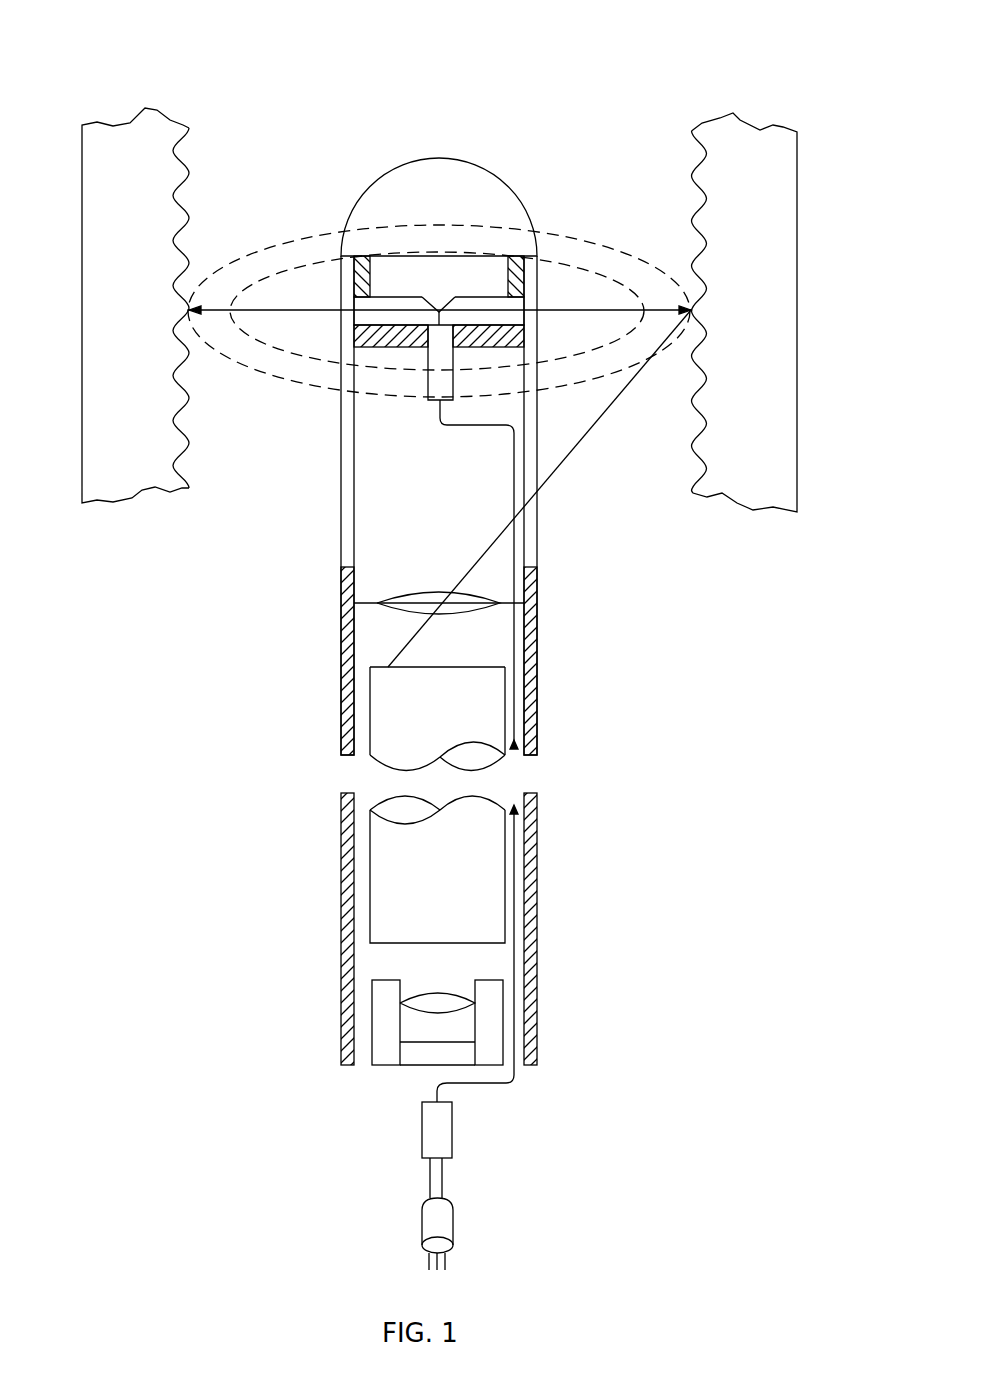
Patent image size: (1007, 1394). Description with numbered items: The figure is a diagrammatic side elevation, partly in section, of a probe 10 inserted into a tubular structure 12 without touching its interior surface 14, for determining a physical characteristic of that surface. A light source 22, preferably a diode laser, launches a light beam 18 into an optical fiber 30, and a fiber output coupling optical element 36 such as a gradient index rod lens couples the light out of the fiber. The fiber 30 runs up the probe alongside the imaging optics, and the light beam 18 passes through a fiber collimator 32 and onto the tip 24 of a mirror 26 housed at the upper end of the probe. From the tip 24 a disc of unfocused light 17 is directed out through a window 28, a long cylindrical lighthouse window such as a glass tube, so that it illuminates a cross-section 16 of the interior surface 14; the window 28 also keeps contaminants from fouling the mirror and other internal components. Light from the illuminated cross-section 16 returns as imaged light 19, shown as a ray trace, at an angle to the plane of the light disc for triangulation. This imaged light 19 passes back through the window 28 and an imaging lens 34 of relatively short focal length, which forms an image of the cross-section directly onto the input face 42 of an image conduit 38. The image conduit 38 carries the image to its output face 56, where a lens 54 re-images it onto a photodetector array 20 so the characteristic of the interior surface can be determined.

The probe 10 is at (594, 122).
The tubular structure 12 is at (142, 322).
The interior surface 14 is at (189, 243).
The cross-section 16 is at (298, 387).
The disc of unfocused light 17 is at (318, 252).
The light beam 18 is at (442, 316).
The imaged light 19 is at (572, 452).
The photodetector array 20 is at (413, 1063).
The light source 22 is at (455, 1220).
The tip 24 is at (440, 308).
The mirror 26 is at (422, 287).
The window 28 is at (538, 535).
The optical fiber 30 is at (513, 475).
The fiber collimator 32 is at (440, 400).
The imaging lens 34 is at (407, 600).
The fiber output coupling optical element 36 is at (445, 1140).
The image conduit 38 is at (463, 722).
The input face 42 is at (470, 667).
The lens 54 is at (445, 1003).
The output face 56 is at (380, 944).